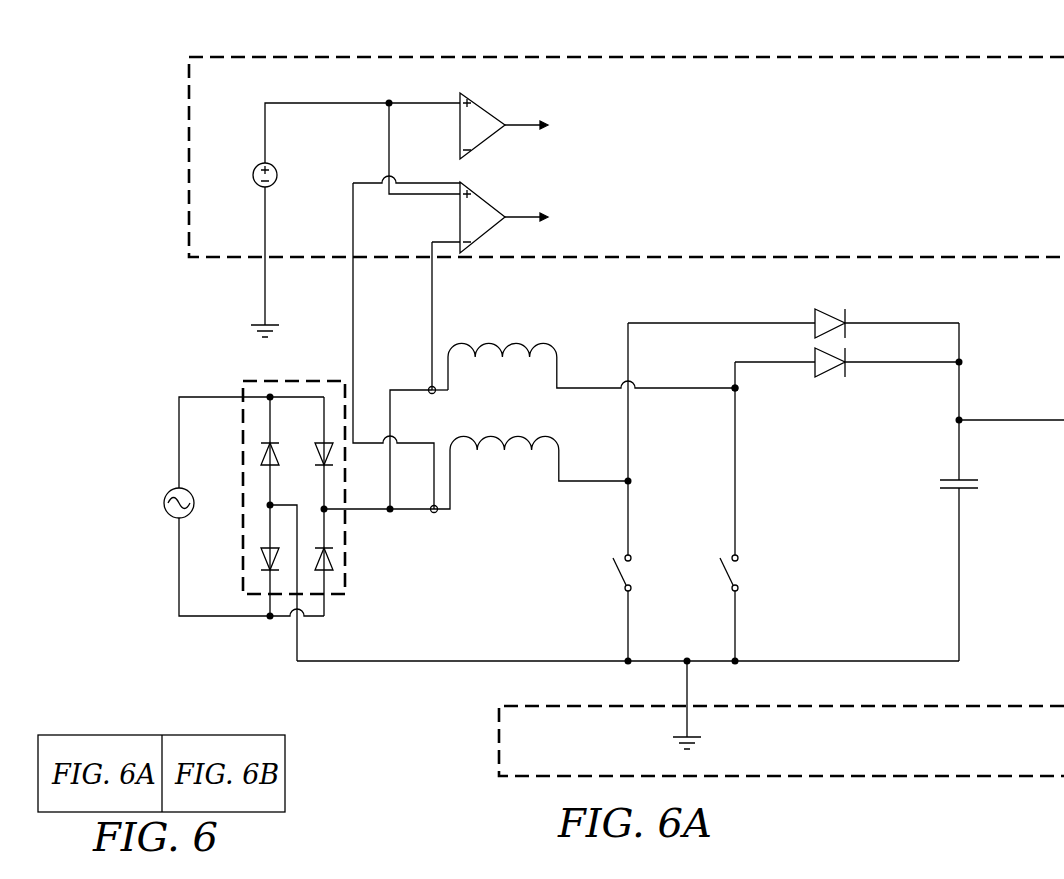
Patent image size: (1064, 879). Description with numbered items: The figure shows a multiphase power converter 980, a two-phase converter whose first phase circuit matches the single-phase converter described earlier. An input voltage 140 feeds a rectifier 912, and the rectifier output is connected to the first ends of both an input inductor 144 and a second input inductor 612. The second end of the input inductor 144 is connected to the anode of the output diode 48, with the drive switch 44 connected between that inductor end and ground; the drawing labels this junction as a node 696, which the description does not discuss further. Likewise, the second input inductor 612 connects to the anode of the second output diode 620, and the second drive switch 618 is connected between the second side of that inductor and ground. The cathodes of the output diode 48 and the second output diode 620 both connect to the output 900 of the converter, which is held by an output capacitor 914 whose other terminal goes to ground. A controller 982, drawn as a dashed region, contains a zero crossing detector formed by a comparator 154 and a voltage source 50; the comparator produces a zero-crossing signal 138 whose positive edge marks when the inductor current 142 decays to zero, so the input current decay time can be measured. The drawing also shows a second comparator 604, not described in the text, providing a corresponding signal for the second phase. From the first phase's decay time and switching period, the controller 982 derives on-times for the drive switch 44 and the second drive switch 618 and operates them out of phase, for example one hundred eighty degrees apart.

The multiphase power converter 980 is at (118, 70).
The controller 982 is at (903, 56).
The voltage source 50 is at (252, 175).
The comparator (ZCD_PH2) 604 is at (485, 104).
The comparator 154 is at (485, 196).
The zero-crossing signal 138 is at (597, 206).
The input voltage 140 is at (164, 503).
The rectifier 912 is at (251, 380).
The inductor current 142 is at (435, 393).
The input inductor 144 is at (515, 342).
The second input inductor 612 is at (517, 434).
The second output diode 620 is at (831, 314).
The output diode 48 is at (831, 372).
The node 696 is at (739, 390).
The output voltage 900 is at (992, 418).
The output capacitor 914 is at (955, 478).
The second drive switch 618 is at (622, 575).
The drive switch 44 is at (729, 575).